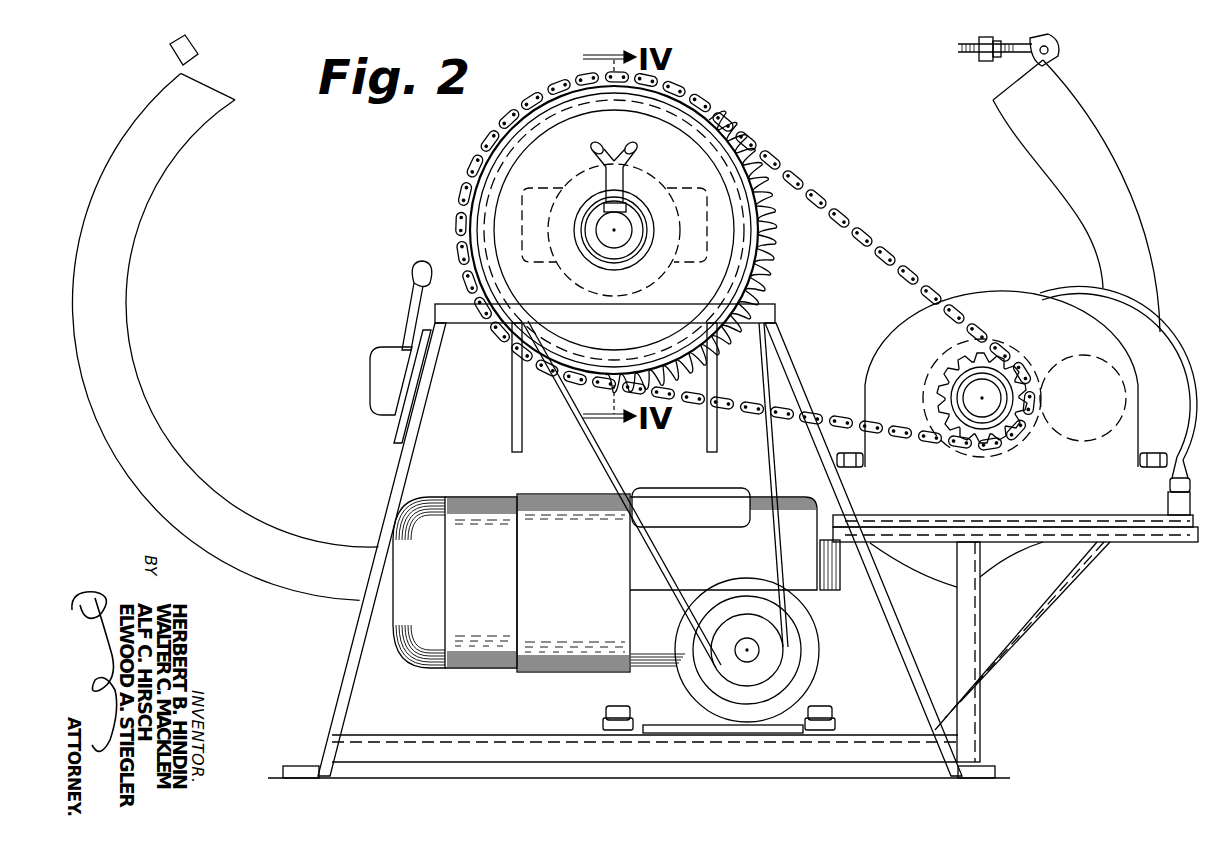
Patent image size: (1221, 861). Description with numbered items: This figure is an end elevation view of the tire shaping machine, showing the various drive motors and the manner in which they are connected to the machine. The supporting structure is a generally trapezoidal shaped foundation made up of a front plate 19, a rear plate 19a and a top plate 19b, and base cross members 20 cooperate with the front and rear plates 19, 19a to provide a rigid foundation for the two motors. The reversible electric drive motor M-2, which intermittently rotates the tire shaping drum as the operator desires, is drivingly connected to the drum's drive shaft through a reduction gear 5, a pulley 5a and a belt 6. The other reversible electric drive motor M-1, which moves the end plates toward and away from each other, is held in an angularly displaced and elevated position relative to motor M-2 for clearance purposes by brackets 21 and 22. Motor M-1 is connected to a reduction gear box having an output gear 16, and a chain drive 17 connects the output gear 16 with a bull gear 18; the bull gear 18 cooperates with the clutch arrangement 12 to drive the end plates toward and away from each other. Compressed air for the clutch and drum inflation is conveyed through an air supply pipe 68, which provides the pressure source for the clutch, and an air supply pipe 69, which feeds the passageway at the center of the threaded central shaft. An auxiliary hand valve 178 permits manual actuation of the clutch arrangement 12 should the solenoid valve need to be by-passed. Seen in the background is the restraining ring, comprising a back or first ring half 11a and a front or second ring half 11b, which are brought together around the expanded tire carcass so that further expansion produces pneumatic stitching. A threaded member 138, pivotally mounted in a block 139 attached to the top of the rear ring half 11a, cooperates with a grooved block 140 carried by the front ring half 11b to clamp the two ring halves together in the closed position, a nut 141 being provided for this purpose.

The back or first ring half 11a is at (1130, 216).
The front or second ring half 11b is at (135, 402).
The grooved block 140 is at (188, 50).
The nut 141 is at (980, 58).
The threaded member 138 is at (1003, 60).
The block 139 is at (1048, 60).
The clutch arrangement 12 is at (724, 134).
The bull gear 18 is at (778, 254).
The air supply pipe 68 is at (630, 160).
The air supply pipe 69 is at (596, 160).
The chain drive 17 is at (848, 216).
The output gear 16 is at (940, 382).
The reversible electric drive motor M-1 is at (1135, 320).
The reversible electric drive motor M-2 is at (488, 664).
The front plate 19 is at (388, 508).
The rear plate 19a is at (880, 586).
The top plate 19b is at (452, 306).
The auxiliary hand valve 178 is at (385, 383).
The base cross members 20 is at (405, 752).
The bracket 21 is at (978, 582).
The bracket 22 is at (1073, 606).
The reduction gear 5 is at (808, 690).
The pulley 5a is at (770, 653).
The belt 6 is at (595, 437).